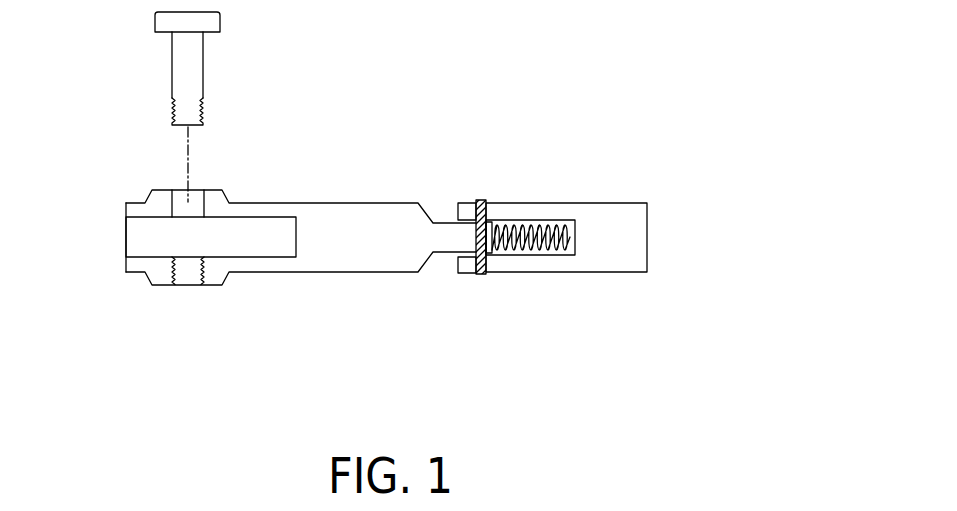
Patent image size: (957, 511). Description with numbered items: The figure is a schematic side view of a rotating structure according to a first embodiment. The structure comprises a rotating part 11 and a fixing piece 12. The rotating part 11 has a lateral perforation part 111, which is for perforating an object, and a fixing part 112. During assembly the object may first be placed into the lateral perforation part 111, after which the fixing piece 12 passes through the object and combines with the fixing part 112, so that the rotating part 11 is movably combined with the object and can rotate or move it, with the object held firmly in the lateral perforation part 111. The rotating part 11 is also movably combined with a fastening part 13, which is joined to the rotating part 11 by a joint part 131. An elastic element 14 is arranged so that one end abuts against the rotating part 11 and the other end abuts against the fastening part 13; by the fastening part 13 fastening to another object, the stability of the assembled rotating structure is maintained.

The rotating part 11 is at (260, 229).
The fixing piece 12 is at (197, 63).
The fastening part 13 is at (556, 224).
The elastic element 14 is at (550, 243).
The lateral perforation part 111 is at (158, 240).
The fixing part 112 is at (170, 275).
The joint part 131 is at (480, 199).